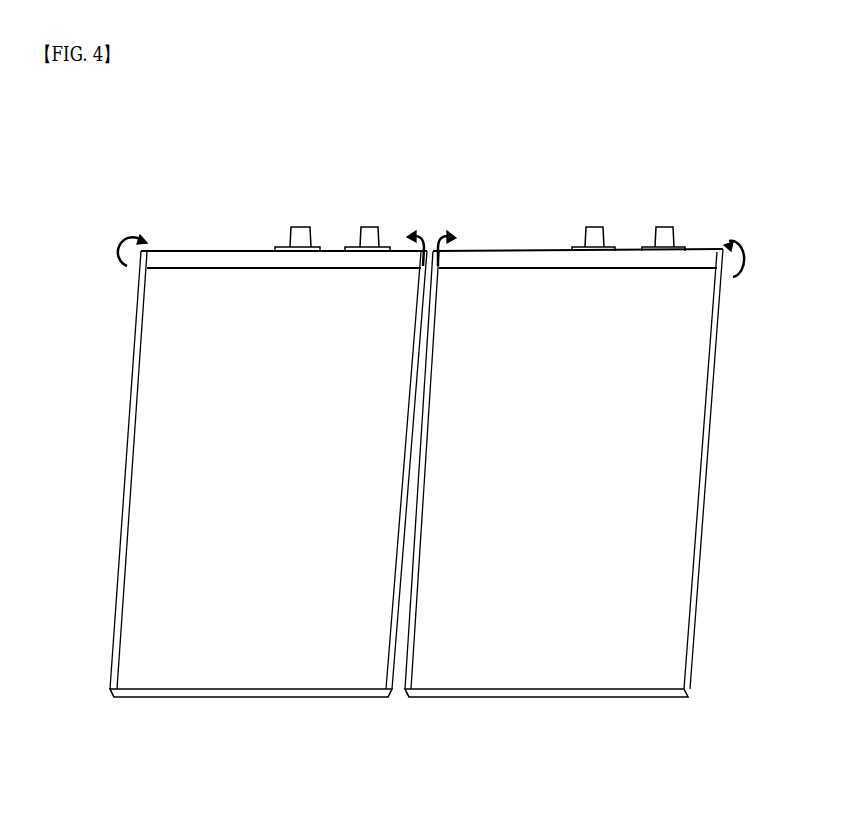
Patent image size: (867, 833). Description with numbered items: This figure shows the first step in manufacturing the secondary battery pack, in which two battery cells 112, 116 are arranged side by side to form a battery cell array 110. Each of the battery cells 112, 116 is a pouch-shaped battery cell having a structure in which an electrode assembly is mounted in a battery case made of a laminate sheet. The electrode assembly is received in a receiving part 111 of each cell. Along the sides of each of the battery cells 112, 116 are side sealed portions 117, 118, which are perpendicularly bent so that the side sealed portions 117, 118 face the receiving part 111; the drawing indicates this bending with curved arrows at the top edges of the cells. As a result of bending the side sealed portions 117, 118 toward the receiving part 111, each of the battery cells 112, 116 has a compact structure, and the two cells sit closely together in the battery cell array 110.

The battery cell array 110 is at (175, 196).
The receiving part 111 is at (160, 337).
The battery cell 112 is at (355, 698).
The battery cell 116 is at (580, 698).
The side sealed portion 117 is at (143, 270).
The side sealed portion 118 is at (442, 278).